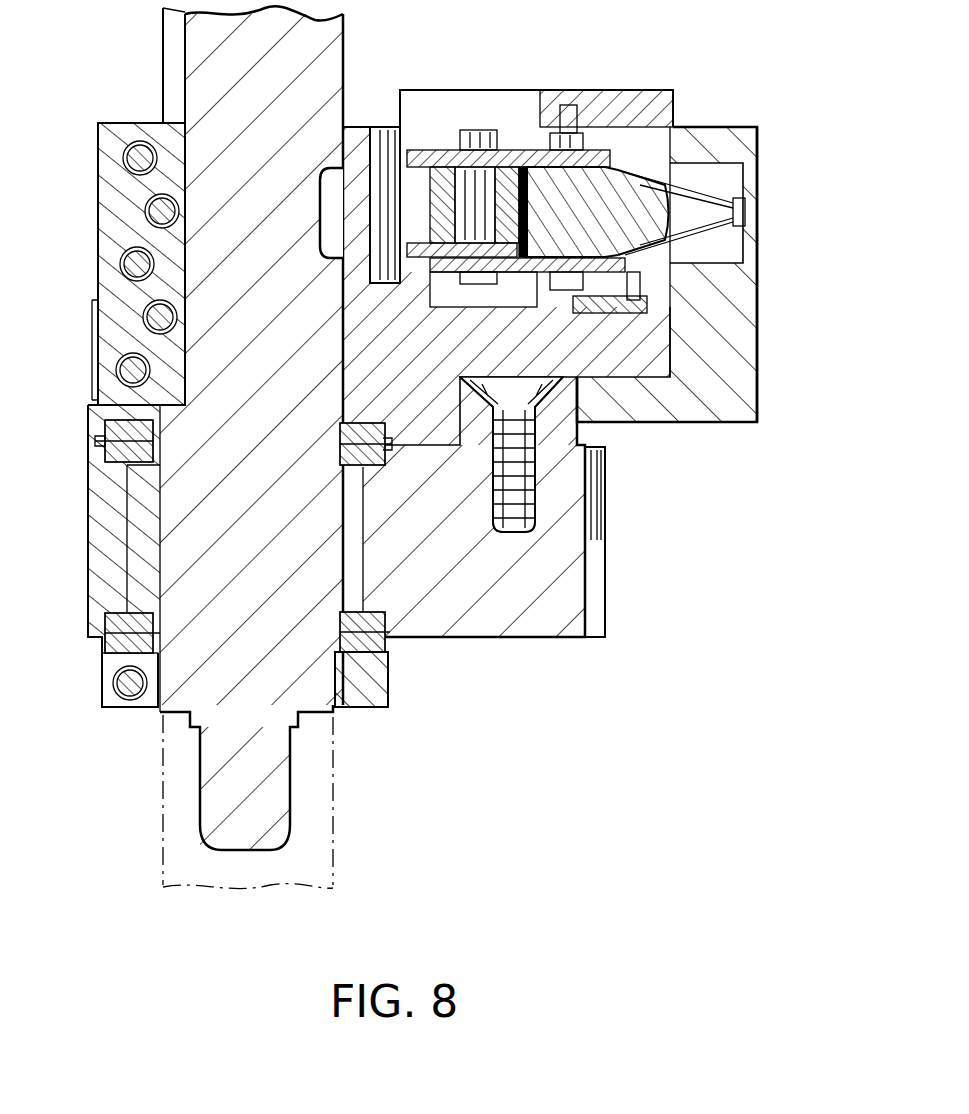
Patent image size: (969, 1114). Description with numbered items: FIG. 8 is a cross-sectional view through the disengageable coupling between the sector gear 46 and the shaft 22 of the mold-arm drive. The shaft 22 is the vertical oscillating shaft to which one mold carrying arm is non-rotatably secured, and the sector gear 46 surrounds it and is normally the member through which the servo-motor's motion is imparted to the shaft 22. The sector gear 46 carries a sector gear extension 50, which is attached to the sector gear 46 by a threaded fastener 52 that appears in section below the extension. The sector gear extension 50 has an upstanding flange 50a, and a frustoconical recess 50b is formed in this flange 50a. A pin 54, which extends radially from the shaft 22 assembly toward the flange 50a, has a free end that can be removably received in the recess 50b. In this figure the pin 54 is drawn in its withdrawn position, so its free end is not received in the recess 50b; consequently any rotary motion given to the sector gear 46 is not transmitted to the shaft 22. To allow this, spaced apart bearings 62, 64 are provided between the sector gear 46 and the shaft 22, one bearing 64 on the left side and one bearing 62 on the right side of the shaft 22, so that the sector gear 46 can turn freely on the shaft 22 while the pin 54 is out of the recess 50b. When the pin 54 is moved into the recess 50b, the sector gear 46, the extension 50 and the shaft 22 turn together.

The shaft 22 is at (317, 73).
The pin 54 is at (618, 177).
The frustoconical recess 50b is at (697, 167).
The upstanding flange 50a is at (760, 358).
The sector gear extension 50 is at (660, 423).
The threaded fastener 52 is at (537, 487).
The sector gear 46 is at (500, 610).
The bearing 62 is at (383, 648).
The bearing 64 is at (94, 466).